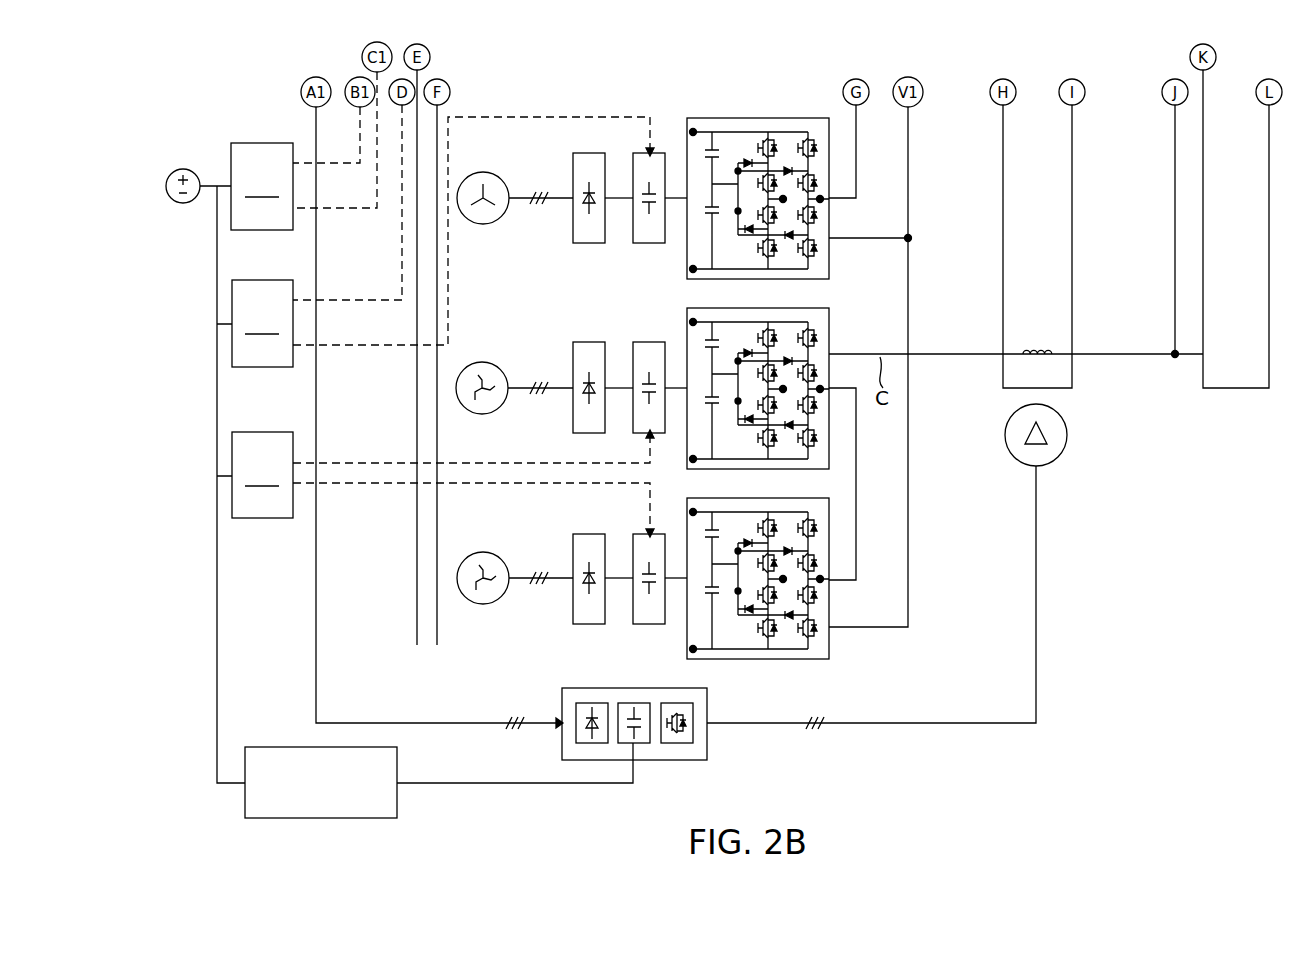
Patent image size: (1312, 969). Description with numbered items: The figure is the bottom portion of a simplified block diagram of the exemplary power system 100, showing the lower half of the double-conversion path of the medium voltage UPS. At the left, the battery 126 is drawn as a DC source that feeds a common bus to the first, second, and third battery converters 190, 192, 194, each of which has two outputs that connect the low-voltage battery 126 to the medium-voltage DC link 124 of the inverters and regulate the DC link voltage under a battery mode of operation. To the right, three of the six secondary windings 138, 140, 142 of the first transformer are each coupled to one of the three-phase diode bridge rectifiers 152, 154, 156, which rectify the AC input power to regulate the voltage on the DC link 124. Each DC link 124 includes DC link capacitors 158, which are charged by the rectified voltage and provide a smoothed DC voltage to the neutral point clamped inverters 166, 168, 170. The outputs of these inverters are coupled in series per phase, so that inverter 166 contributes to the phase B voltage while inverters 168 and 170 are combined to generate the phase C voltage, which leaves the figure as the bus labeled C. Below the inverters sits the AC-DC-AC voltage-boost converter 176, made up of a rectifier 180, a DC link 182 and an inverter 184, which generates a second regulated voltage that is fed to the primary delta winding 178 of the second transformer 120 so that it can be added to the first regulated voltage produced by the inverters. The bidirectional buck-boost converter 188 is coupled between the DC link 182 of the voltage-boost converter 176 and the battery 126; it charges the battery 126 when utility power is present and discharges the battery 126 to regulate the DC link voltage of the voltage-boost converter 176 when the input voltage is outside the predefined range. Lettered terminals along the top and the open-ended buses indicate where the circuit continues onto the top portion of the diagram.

The power system 100 is at (211, 80).
The second transformer 120 is at (1073, 416).
The DC link 124 is at (657, 116).
The battery 126 is at (188, 168).
The secondary winding 138 is at (483, 172).
The secondary winding 140 is at (483, 362).
The secondary winding 142 is at (483, 552).
The three-phase rectifier 152 is at (585, 153).
The three-phase rectifier 154 is at (585, 342).
The three-phase rectifier 156 is at (585, 534).
The DC link capacitor 158 is at (649, 605).
The neutral point clamped inverter 166 is at (760, 118).
The neutral point clamped inverter 168 is at (757, 308).
The neutral point clamped inverter 170 is at (757, 498).
The AC-DC-AC voltage-boost converter 176 is at (669, 709).
The primary delta winding 178 is at (1006, 441).
The rectifier 180 is at (592, 703).
The DC link 182 is at (634, 703).
The inverter 184 is at (677, 703).
The bidirectional buck-boost converter 188 is at (397, 765).
The first battery converter 190 is at (262, 186).
The second battery converter 192 is at (255, 323).
The third battery converter 194 is at (255, 475).